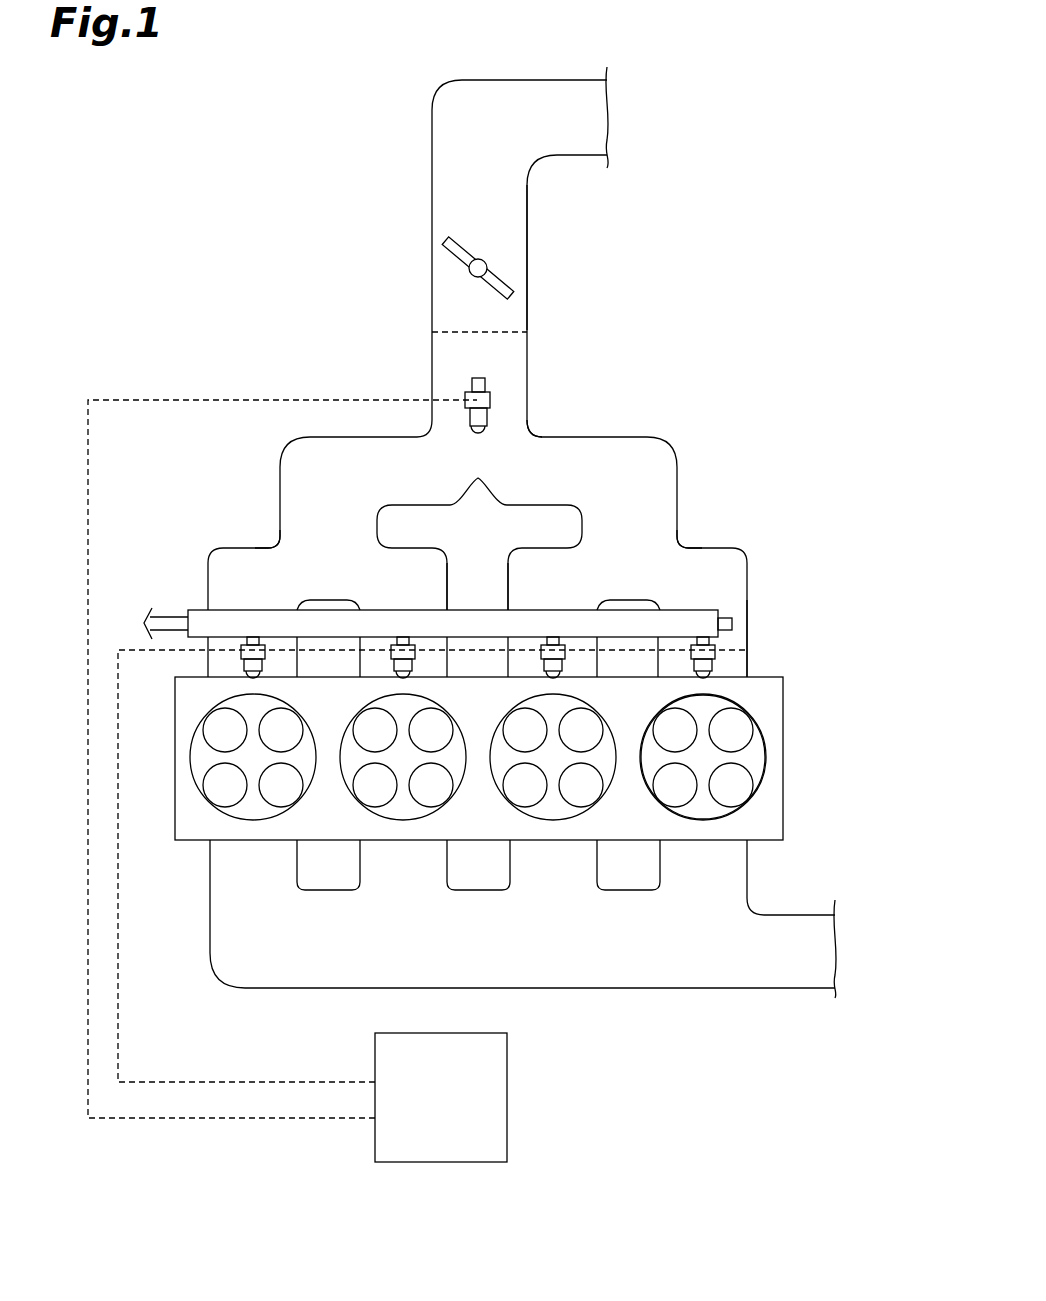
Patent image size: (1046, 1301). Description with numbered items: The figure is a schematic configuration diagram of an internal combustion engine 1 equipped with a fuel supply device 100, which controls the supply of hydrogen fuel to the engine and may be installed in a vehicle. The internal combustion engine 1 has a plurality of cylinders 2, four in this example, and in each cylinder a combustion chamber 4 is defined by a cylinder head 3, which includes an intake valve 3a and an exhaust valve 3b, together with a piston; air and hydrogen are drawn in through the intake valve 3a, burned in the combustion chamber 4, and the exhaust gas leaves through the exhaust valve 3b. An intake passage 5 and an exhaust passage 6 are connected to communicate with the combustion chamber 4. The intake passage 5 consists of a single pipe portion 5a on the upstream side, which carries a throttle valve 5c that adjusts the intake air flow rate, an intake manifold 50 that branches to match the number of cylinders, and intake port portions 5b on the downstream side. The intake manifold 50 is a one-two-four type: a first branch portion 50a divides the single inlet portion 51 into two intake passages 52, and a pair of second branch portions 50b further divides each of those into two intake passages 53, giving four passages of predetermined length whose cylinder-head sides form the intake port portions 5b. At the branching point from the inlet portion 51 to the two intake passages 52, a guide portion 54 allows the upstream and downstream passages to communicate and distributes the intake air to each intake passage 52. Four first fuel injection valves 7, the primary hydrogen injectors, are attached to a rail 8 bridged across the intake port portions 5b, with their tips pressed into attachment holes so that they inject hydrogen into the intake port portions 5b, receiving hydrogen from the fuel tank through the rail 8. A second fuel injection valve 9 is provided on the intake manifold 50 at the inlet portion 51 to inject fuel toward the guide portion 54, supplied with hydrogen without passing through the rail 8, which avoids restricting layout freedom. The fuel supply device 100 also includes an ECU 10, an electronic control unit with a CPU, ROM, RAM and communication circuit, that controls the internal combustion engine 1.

The fuel supply device 100 is at (717, 95).
The internal combustion engine 1 is at (607, 1012).
The cylinder 2 is at (763, 774).
The cylinder head 3 is at (784, 748).
The intake valve 3a is at (735, 720).
The exhaust valve 3b is at (733, 787).
The combustion chamber 4 is at (710, 805).
The intake passage 5 is at (430, 280).
The single pipe portion 5a is at (527, 215).
The intake port portion 5b is at (748, 650).
The throttle valve 5c is at (457, 246).
The exhaust passage 6 is at (765, 990).
The first fuel injection valve 7 is at (395, 662).
The rail 8 is at (195, 606).
The second fuel injection valve 9 is at (470, 385).
The electronic control unit 10 is at (507, 1128).
The intake manifold 50 is at (693, 405).
The first branch portion 50a is at (541, 432).
The second branch portion 50b is at (268, 540).
The inlet portion 51 is at (528, 343).
The intake passage 52 is at (618, 437).
The intake passage 53 is at (210, 577).
The guide portion 54 is at (478, 478).